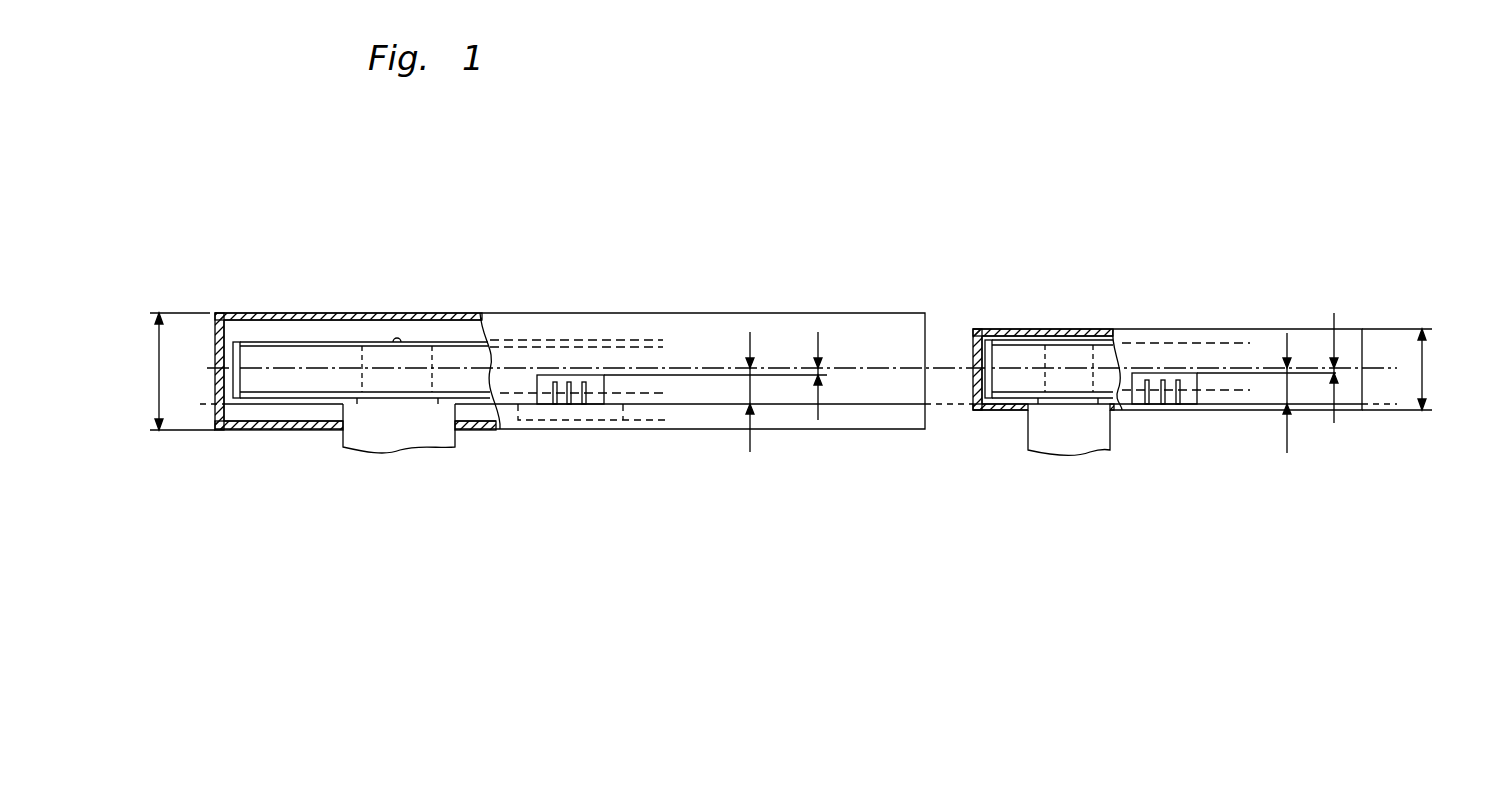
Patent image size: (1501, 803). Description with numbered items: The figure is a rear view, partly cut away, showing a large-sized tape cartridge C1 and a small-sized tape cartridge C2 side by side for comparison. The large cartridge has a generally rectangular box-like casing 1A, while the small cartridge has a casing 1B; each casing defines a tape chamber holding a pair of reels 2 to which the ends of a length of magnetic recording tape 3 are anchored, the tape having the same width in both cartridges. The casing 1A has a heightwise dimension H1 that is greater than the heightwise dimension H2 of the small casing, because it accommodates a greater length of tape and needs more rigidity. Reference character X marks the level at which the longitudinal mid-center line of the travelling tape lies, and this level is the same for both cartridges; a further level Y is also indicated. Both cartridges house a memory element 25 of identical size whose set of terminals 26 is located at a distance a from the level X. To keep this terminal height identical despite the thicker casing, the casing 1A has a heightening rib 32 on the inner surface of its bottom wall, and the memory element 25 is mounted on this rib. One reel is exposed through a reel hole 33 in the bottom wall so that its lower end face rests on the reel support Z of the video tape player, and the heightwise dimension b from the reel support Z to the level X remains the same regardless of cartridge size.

The casing 1A is at (598, 313).
The casing 1B is at (1303, 329).
The reel 2 is at (277, 358).
The magnetic recording tape 3 is at (331, 342).
The memory element 25 is at (553, 373).
The terminals 26 is at (575, 398).
The heightening rib 32 is at (627, 418).
The reel hole 33 is at (458, 431).
The reel support Z is at (343, 432).
The large-sized tape cartridge C1 is at (731, 312).
The small-sized tape cartridge C2 is at (1240, 328).
The heightwise position of tape mid-center line X is at (787, 369).
The reference line Y is at (1378, 430).
The distance from level X to terminals a is at (1076, 368).
The heightwise dimension from reel support b is at (1010, 392).
The heightwise dimension of large casing H1 is at (157, 368).
The heightwise dimension of small casing H2 is at (1424, 368).